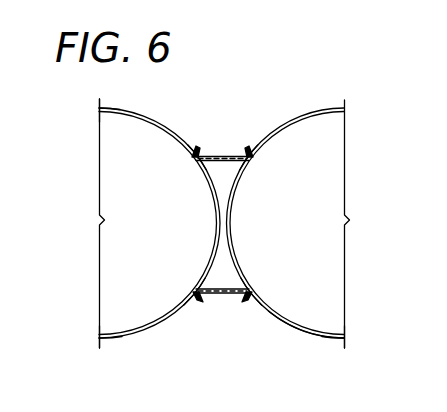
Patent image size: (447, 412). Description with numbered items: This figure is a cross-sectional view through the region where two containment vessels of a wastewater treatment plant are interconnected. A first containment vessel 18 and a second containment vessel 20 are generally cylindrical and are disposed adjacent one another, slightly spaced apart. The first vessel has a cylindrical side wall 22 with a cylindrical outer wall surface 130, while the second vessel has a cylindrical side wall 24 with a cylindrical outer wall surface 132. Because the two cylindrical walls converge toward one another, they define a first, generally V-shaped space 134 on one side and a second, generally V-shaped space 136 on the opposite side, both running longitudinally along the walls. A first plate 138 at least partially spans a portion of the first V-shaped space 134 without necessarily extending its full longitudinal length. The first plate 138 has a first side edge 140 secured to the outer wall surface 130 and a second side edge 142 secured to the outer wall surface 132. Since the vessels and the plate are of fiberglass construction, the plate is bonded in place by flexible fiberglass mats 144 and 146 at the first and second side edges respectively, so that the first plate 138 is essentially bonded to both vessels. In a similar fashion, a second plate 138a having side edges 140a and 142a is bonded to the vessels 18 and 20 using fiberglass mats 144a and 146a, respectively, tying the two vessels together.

The first containment vessel 18 is at (123, 240).
The second containment vessel 20 is at (317, 222).
The cylindrical side wall 22 is at (118, 107).
The cylindrical side wall 24 is at (296, 325).
The outer wall surface 130 is at (115, 342).
The outer wall surface 132 is at (323, 342).
The first V-shaped space 134 is at (225, 277).
The second V-shaped space 136 is at (222, 173).
The first plate 138 is at (221, 343).
The second plate 138a is at (226, 108).
The first side edge 140 is at (200, 293).
The side edge 140a is at (200, 162).
The second side edge 142 is at (248, 292).
The side edge 142a is at (246, 160).
The flexible fiberglass mat 144 is at (203, 302).
The fiberglass mat 144a is at (194, 148).
The flexible fiberglass mat 146 is at (246, 302).
The fiberglass mat 146a is at (248, 148).